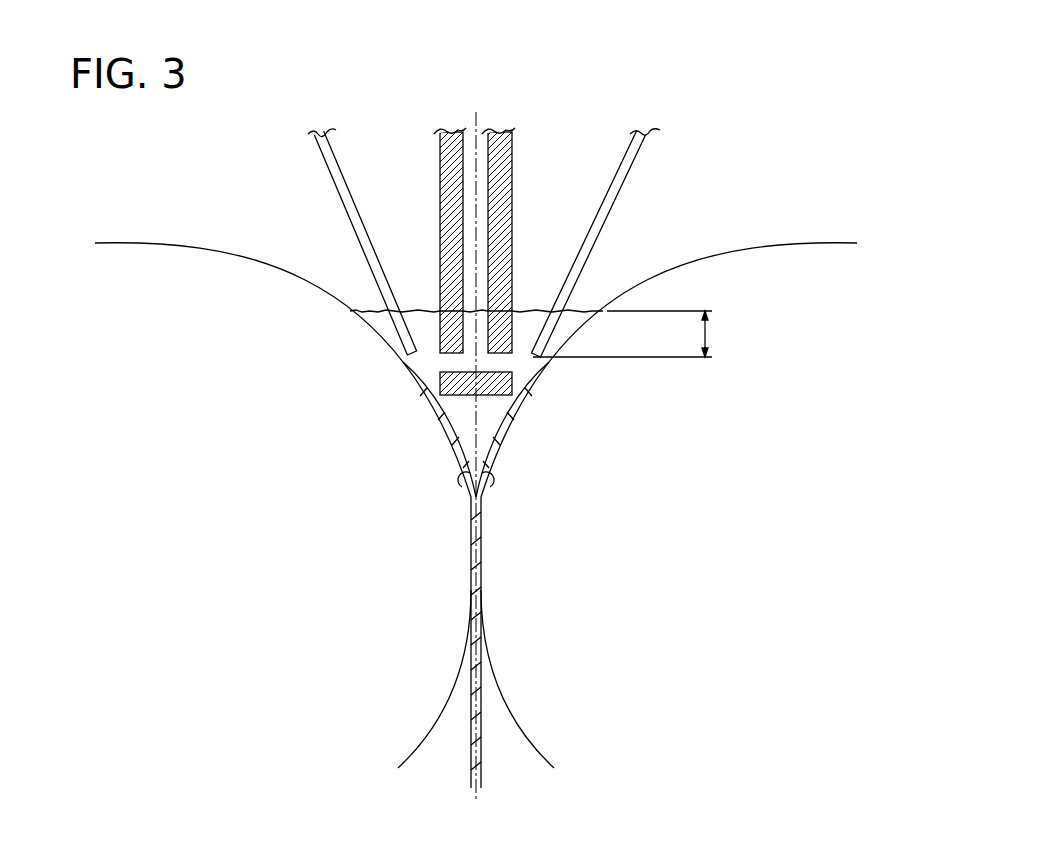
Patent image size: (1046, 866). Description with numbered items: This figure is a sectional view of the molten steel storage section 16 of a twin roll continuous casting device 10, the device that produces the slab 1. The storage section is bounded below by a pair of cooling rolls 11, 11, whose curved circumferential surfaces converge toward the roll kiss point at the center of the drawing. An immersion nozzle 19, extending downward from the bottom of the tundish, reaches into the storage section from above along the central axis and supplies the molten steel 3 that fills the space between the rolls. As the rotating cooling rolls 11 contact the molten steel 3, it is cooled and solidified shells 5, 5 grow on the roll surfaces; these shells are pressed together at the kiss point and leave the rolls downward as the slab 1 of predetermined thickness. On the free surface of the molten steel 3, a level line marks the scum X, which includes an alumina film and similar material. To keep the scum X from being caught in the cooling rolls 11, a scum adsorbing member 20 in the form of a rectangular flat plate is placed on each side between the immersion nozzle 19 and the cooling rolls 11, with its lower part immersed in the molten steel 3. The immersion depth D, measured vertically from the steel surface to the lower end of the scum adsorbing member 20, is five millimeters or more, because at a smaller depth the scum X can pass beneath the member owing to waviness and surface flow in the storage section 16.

The slab 1 is at (471, 738).
The molten steel 3 is at (490, 440).
The solidified shell 5 is at (462, 487).
The twin roll continuous casting device 10 is at (752, 192).
The cooling roll 11 is at (188, 441).
The molten steel storage section 16 is at (541, 236).
The immersion nozzle 19 is at (512, 148).
The scum adsorbing member 20 is at (352, 218).
The scum X is at (423, 309).
The immersion depth D is at (633, 334).